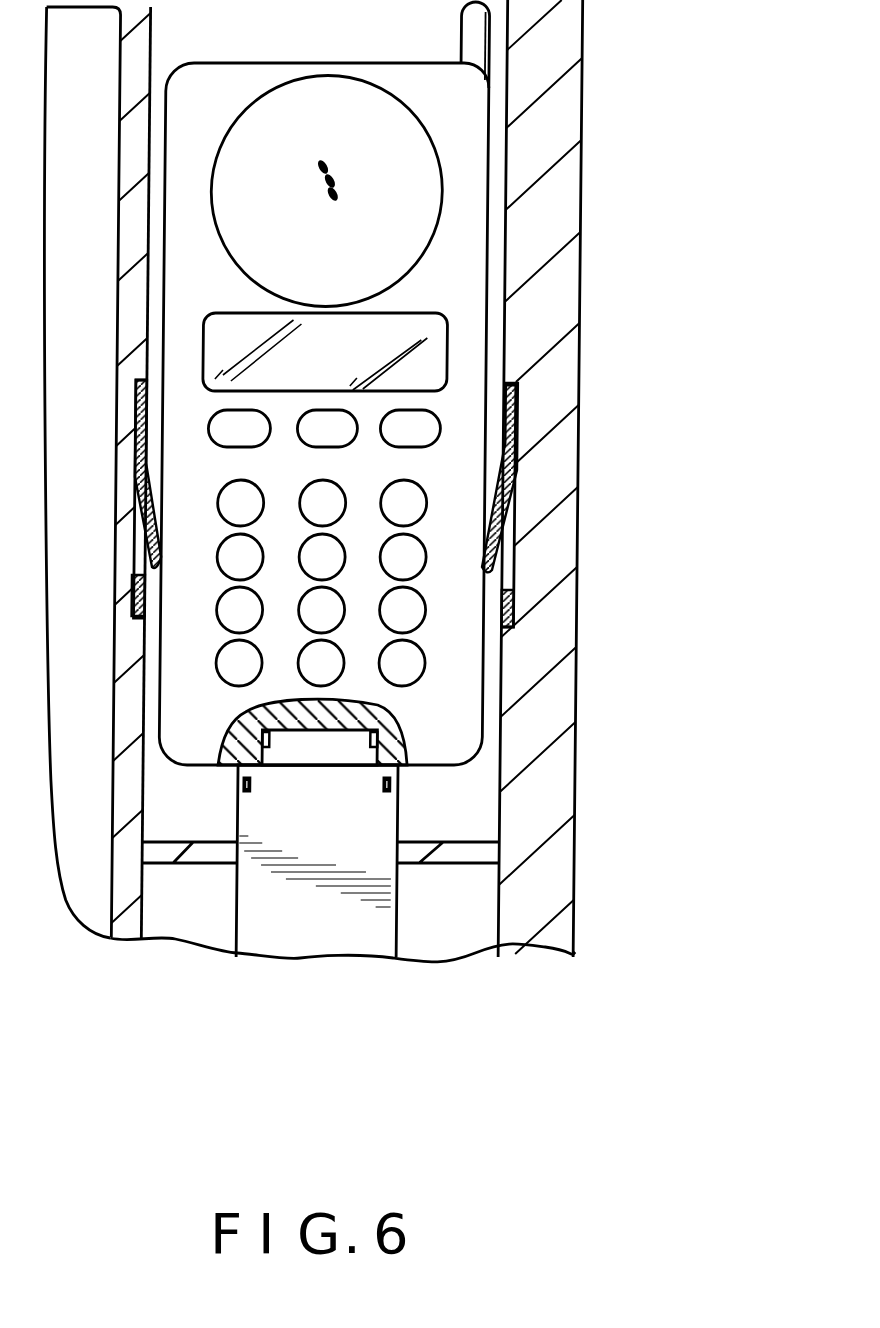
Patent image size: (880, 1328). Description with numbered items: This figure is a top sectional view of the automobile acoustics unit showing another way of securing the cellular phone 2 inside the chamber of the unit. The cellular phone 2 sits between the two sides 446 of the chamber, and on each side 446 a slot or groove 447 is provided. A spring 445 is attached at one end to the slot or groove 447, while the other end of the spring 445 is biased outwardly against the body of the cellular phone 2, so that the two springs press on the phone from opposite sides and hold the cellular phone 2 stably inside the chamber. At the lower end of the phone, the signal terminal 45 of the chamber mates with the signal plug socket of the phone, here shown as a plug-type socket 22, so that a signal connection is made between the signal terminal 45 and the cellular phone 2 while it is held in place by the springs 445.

The cellular phone 2 is at (455, 231).
The plug-type socket 22 is at (387, 742).
The signal terminal 45 is at (373, 827).
The spring 445 is at (503, 520).
The side 446 is at (510, 165).
The slot or groove 447 is at (513, 560).